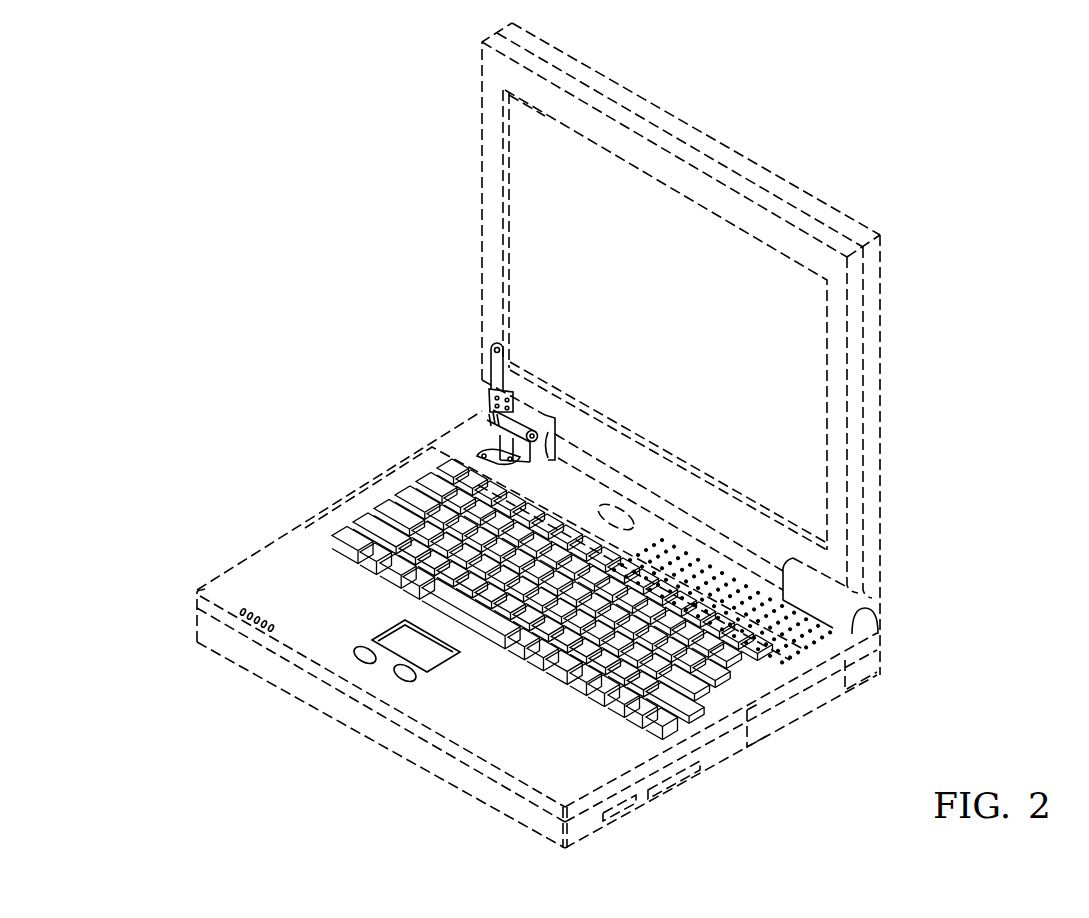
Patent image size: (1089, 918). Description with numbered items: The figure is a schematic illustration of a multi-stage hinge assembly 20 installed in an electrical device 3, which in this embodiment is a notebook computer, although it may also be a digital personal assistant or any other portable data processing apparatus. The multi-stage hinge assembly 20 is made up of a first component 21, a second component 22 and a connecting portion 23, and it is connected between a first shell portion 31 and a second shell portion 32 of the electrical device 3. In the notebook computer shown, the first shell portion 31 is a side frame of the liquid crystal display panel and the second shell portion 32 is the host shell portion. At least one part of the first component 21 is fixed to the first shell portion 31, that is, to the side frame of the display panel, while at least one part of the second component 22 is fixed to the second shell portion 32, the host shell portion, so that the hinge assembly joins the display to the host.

The electrical device 3 is at (587, 435).
The multi-stage hinge assembly 20 is at (435, 392).
The first component 21 is at (465, 355).
The second component 22 is at (455, 434).
The connecting portion 23 is at (466, 404).
The first shell portion 31 is at (749, 349).
The second shell portion 32 is at (537, 629).